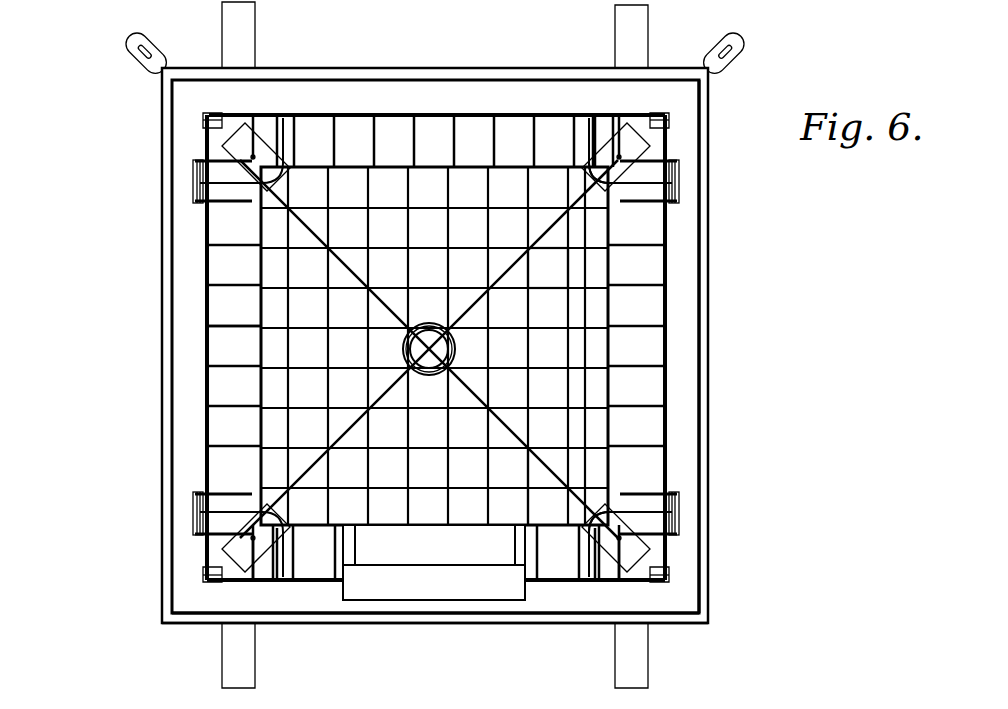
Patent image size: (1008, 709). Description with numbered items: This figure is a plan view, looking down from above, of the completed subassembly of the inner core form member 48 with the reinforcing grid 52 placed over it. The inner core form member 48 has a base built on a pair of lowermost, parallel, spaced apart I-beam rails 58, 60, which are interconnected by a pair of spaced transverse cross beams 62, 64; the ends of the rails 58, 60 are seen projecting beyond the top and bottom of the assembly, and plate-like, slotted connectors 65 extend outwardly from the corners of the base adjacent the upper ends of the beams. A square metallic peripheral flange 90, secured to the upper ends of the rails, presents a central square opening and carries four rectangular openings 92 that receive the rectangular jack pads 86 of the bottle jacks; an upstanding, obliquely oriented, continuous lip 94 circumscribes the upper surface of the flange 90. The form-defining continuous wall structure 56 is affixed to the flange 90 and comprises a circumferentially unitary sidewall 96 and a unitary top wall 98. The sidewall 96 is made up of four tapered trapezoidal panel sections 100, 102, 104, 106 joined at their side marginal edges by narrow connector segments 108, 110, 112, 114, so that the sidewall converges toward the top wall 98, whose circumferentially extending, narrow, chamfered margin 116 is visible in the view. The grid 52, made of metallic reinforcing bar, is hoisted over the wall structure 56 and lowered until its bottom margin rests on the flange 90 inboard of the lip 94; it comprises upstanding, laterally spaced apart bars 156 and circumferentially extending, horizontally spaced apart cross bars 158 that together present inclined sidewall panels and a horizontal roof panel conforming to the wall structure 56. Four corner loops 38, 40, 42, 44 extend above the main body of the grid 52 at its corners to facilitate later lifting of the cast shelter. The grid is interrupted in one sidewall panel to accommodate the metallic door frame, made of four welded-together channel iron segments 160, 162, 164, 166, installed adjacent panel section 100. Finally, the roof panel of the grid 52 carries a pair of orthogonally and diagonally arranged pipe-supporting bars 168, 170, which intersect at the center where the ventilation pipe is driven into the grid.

The reinforcing bar loop 38 is at (614, 568).
The reinforcing bar loop 40 is at (592, 130).
The reinforcing bar loop 42 is at (247, 138).
The reinforcing bar loop 44 is at (256, 562).
The inner core form member 48 is at (500, 340).
The grid 52 is at (678, 338).
The wall structure 56 is at (236, 300).
The I-beam rail 58 is at (643, 38).
The I-beam rail 60 is at (245, 45).
The cross beam 62 is at (512, 62).
The cross beam 64 is at (483, 628).
The slotted connector 65 is at (142, 62).
The jack pad 86 is at (200, 172).
The peripheral flange 90 is at (692, 546).
The rectangular opening 92 is at (200, 191).
The lip 94 is at (706, 290).
The sidewall 96 is at (672, 566).
The top wall 98 is at (552, 266).
The panel section 100 is at (540, 520).
The panel section 102 is at (690, 362).
The panel section 104 is at (541, 140).
The panel section 106 is at (232, 346).
The connector segment 108 is at (614, 522).
The connector segment 110 is at (645, 150).
The connector segment 112 is at (218, 118).
The connector segment 114 is at (207, 567).
The chamfered margin 116 is at (393, 180).
The bar 156 is at (236, 372).
The cross bar 158 is at (362, 112).
The channel iron segment 160 is at (388, 546).
The channel iron segment 162 is at (348, 588).
The channel iron segment 164 is at (429, 586).
The channel iron segment 166 is at (520, 592).
The pipe-supporting bar 168 is at (388, 303).
The pipe-supporting bar 170 is at (473, 302).